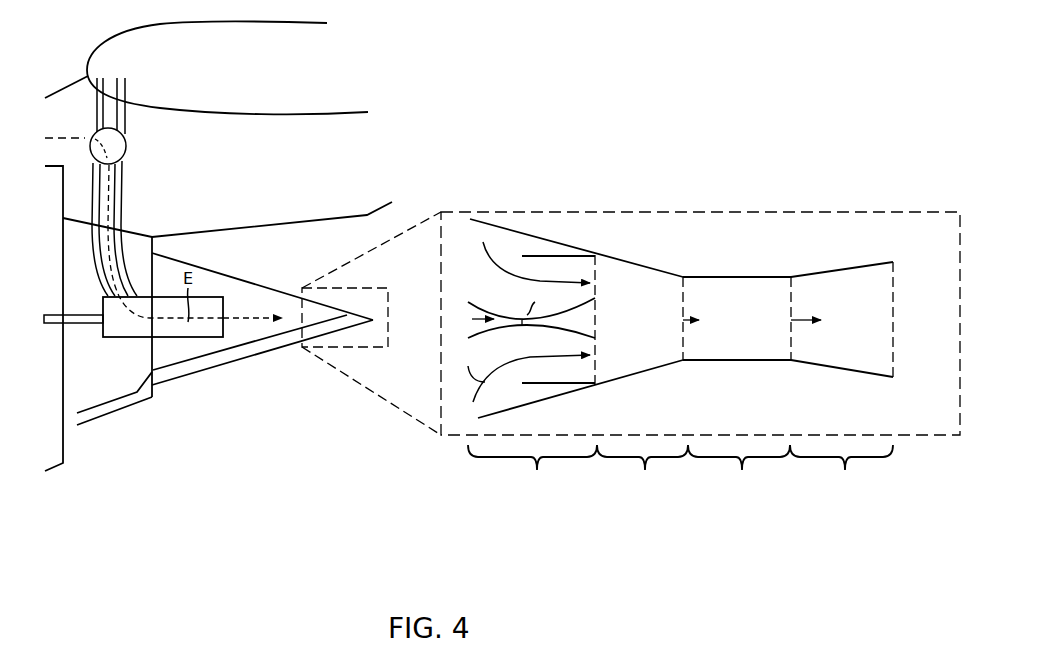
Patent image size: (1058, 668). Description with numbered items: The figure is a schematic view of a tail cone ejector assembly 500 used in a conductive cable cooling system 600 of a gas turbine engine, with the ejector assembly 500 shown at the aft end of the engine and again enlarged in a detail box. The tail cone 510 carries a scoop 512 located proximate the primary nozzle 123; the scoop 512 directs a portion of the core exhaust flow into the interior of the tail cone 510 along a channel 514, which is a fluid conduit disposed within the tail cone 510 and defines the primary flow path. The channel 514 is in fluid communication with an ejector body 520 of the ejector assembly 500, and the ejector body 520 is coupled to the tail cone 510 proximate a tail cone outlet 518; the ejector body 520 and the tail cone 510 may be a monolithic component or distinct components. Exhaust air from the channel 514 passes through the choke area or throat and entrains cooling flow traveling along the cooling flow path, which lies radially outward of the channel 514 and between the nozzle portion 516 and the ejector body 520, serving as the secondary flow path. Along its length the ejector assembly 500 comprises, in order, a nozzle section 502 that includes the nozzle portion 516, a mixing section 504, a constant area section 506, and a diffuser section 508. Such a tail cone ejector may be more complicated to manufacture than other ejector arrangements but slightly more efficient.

The conductive cable cooling system 600 is at (160, 196).
The primary nozzle 123 is at (65, 445).
The scoop 512 is at (77, 427).
The tail cone ejector assembly 500 is at (342, 392).
The tail cone 510 is at (205, 367).
The channel 514 is at (248, 350).
The nozzle portion 516 is at (492, 330).
The tail cone outlet 518 is at (577, 255).
The ejector body 520 is at (677, 363).
The nozzle section 502 is at (532, 470).
The mixing section 504 is at (642, 469).
The constant area section 506 is at (739, 469).
The diffuser section 508 is at (841, 469).